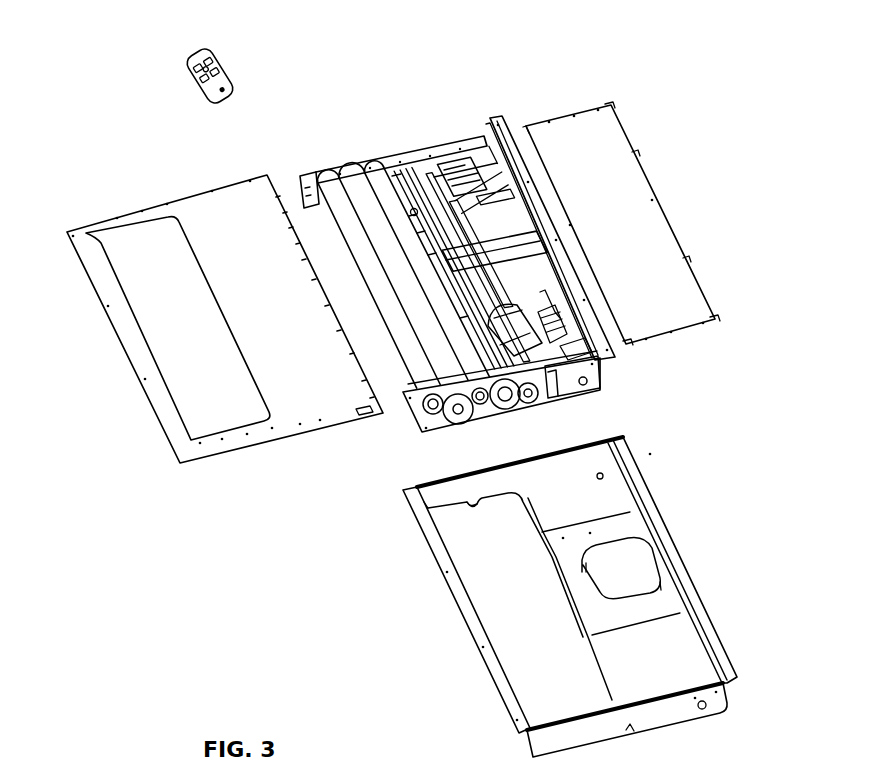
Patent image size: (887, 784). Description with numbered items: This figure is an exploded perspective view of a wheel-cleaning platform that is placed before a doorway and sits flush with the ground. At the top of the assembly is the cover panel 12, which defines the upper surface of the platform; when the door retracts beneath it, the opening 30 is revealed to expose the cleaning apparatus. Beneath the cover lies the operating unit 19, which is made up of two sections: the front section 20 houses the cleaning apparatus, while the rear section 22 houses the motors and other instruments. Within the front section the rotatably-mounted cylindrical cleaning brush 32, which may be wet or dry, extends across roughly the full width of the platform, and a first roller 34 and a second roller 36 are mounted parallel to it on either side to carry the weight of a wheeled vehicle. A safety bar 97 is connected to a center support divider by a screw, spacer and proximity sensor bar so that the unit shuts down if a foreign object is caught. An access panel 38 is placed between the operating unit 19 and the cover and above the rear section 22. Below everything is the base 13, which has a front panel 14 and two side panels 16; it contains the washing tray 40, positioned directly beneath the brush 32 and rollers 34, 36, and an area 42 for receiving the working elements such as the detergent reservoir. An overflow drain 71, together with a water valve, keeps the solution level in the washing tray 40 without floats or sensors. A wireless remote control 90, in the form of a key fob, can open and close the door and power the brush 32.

The cover panel 12 is at (210, 243).
The base 13 is at (647, 712).
The front panel 14 is at (521, 733).
The side panels 16 is at (590, 733).
The operating unit 19 is at (625, 382).
The front section 20 is at (303, 171).
The rear section 22 is at (463, 143).
The opening 30 is at (157, 272).
The cleaning brush 32 is at (357, 195).
The first roller 34 is at (376, 182).
The second roller 36 is at (330, 185).
The access panel 38 is at (630, 212).
The washing tray 40 is at (507, 606).
The area for receiving working elements 42 is at (685, 650).
The overflow drain 71 is at (467, 503).
The wireless remote control 90 is at (187, 67).
The safety bar 97 is at (410, 219).